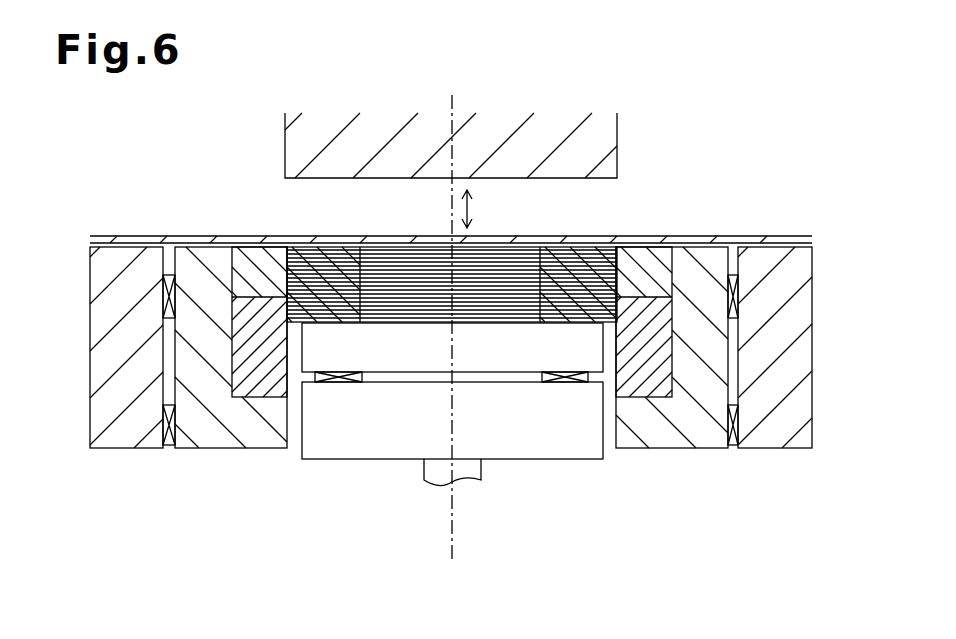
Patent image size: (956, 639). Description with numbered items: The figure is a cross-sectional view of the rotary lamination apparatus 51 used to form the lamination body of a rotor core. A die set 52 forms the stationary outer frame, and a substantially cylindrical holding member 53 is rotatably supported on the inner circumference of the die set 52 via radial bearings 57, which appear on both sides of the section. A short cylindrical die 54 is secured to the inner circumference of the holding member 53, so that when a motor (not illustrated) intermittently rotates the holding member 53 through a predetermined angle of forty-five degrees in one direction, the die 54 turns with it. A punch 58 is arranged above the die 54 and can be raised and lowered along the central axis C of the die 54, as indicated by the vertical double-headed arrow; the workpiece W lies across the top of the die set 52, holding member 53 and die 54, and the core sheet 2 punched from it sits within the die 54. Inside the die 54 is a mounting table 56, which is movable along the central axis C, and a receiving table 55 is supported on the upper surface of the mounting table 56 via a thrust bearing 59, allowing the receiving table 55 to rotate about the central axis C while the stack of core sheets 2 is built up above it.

The core sheet 2 is at (347, 238).
The rotary lamination apparatus 51 is at (758, 151).
The die set 52 is at (142, 443).
The holding member 53 is at (217, 443).
The die 54 is at (243, 252).
The receiving table 55 is at (407, 363).
The mounting table 56 is at (348, 448).
The radial bearing 57 is at (165, 418).
The punch 58 is at (617, 145).
The thrust bearing 59 is at (337, 382).
The workpiece W is at (182, 237).
The central axis C is at (450, 515).